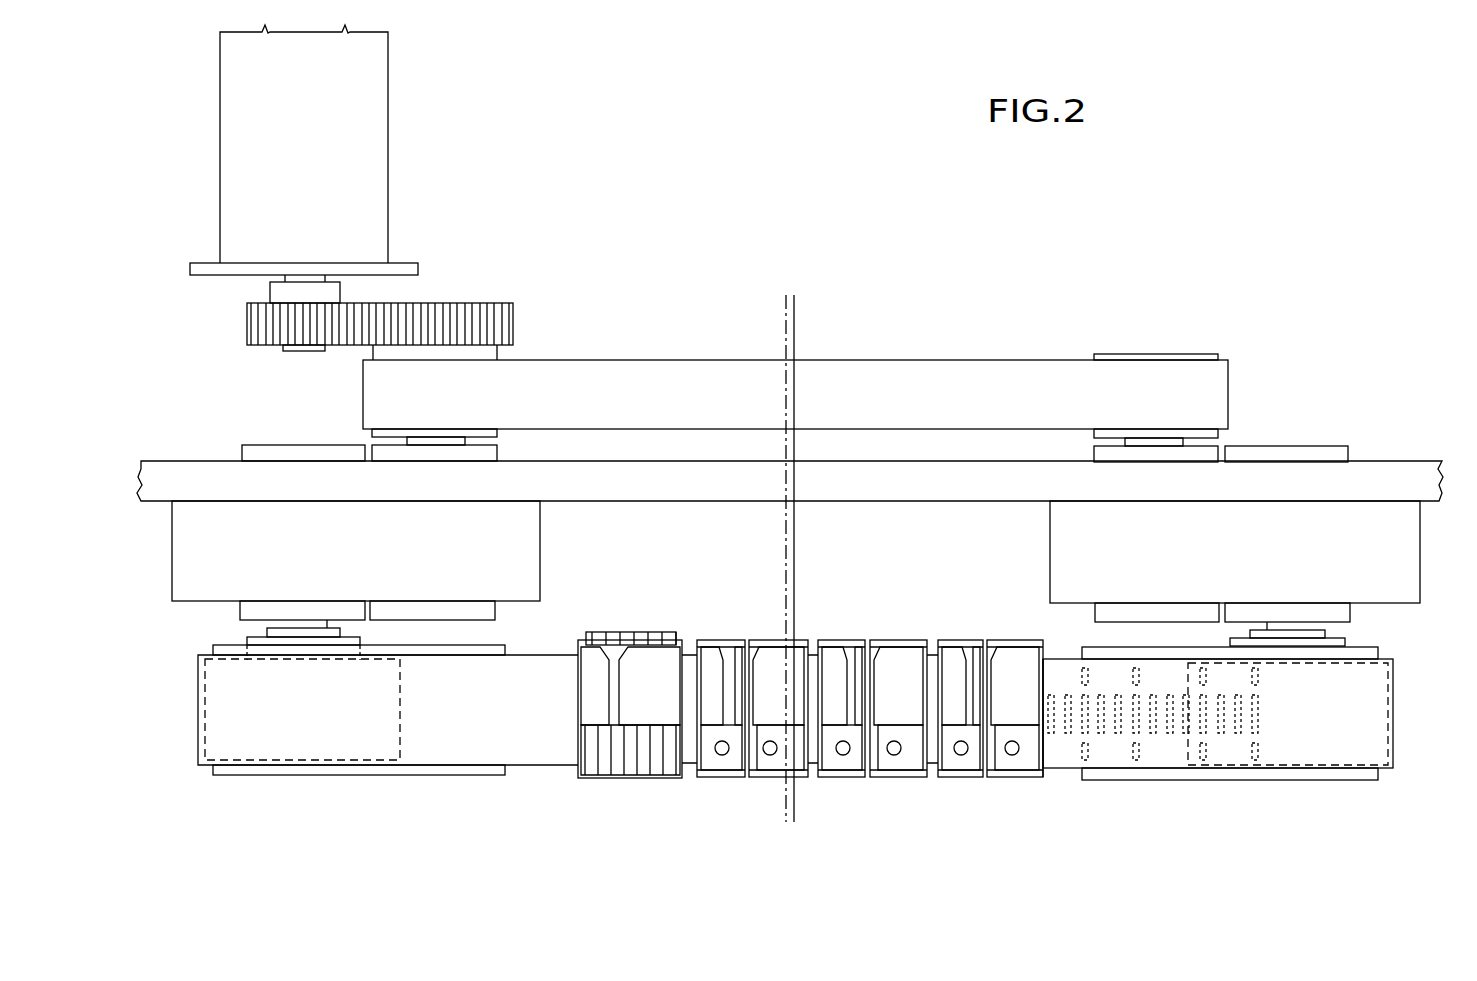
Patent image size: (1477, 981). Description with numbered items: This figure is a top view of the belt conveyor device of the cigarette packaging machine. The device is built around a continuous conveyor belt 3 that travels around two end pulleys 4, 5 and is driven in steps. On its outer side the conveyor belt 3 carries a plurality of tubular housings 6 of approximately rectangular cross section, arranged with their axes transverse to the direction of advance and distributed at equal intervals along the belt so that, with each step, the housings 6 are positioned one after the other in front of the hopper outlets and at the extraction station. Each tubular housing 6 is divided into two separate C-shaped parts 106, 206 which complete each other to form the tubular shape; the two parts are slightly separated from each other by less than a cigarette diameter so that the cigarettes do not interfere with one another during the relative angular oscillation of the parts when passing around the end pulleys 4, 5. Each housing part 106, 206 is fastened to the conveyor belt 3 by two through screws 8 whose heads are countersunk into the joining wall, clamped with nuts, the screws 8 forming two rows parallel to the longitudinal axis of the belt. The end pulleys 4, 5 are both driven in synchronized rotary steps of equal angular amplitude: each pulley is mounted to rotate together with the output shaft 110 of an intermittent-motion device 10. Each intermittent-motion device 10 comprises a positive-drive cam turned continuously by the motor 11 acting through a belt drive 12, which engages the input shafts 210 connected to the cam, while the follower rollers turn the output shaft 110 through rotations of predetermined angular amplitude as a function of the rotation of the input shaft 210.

The motor 11 is at (378, 158).
The belt drive 12 is at (867, 355).
The input shaft 210 is at (446, 440).
The intermittent-motion device 10 is at (169, 550).
The output shaft 110 is at (282, 622).
The pulley 5 is at (197, 754).
The through screw 8 is at (769, 756).
The C-shaped housing part 106 is at (845, 640).
The C-shaped housing part 206 is at (884, 778).
The tubular housing 6 is at (904, 634).
The pulley 4 is at (1400, 738).
The conveyor belt 3 is at (1060, 663).